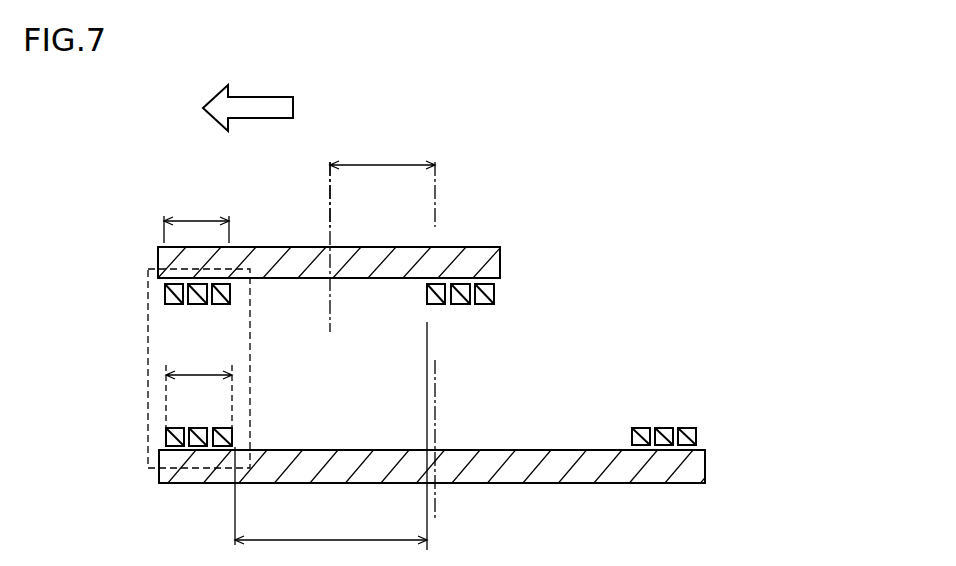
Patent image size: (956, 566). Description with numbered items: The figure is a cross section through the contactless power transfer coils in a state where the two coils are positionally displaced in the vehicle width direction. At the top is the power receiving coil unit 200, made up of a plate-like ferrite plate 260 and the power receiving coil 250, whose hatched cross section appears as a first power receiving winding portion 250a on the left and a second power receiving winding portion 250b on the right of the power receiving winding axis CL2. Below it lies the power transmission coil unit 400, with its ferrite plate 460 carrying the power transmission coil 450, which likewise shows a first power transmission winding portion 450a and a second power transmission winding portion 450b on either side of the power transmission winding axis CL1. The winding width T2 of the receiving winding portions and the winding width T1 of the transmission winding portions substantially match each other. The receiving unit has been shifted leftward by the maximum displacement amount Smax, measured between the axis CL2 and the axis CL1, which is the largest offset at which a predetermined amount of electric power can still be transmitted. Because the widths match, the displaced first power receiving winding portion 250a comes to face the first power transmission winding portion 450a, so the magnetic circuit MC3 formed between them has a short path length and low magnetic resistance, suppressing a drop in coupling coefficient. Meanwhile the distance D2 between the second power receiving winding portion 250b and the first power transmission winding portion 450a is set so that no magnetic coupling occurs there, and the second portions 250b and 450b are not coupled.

The power receiving coil unit 200 is at (91, 248).
The ferrite plate 260 is at (176, 264).
The power receiving coil 250 is at (166, 294).
The first power receiving winding portion 250a is at (230, 307).
The second power receiving winding portion 250b is at (494, 307).
The magnetic circuit MC3 is at (148, 382).
The winding width of power receiving winding portion T2 is at (196, 217).
The winding width of power transmission winding portion T1 is at (199, 397).
The maximum displacement amount Smax is at (382, 184).
The power receiving winding axis CL2 is at (330, 217).
The power transmission winding axis CL1 is at (435, 514).
The distance D2 is at (331, 436).
The power transmission coil unit 400 is at (771, 422).
The ferrite plate 460 is at (690, 469).
The power transmission coil 450 is at (698, 437).
The first power transmission winding portion 450a is at (232, 424).
The second power transmission winding portion 450b is at (696, 425).